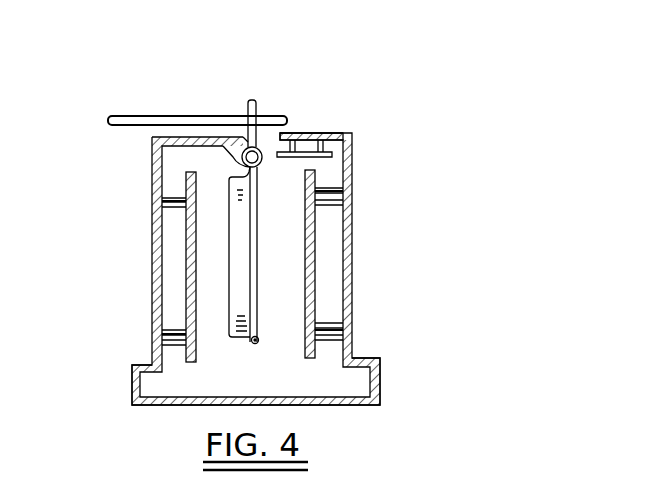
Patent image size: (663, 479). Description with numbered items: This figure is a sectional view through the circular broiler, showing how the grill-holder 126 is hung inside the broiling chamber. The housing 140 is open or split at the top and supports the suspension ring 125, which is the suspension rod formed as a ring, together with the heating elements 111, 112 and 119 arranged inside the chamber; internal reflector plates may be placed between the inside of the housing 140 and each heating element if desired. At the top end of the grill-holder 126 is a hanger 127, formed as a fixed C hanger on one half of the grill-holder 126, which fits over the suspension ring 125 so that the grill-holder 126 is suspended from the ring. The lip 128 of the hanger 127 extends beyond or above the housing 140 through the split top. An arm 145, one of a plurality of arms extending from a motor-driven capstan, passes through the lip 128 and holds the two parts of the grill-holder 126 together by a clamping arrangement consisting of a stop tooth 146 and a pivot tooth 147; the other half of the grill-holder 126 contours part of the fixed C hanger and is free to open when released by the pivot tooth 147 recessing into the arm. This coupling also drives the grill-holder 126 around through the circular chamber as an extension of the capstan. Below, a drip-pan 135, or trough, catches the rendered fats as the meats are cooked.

The heating element 111 is at (152, 253).
The heating element 112 is at (318, 290).
The heating element 119 is at (350, 134).
The suspension ring 125 is at (232, 137).
The grill-holder 126 is at (243, 344).
The hanger 127 is at (312, 134).
The lip 128 is at (288, 133).
The drip-pan 135 is at (380, 360).
The housing 140 is at (353, 160).
The arm 145 is at (117, 115).
The stop tooth 146 is at (247, 102).
The pivot tooth 147 is at (257, 110).